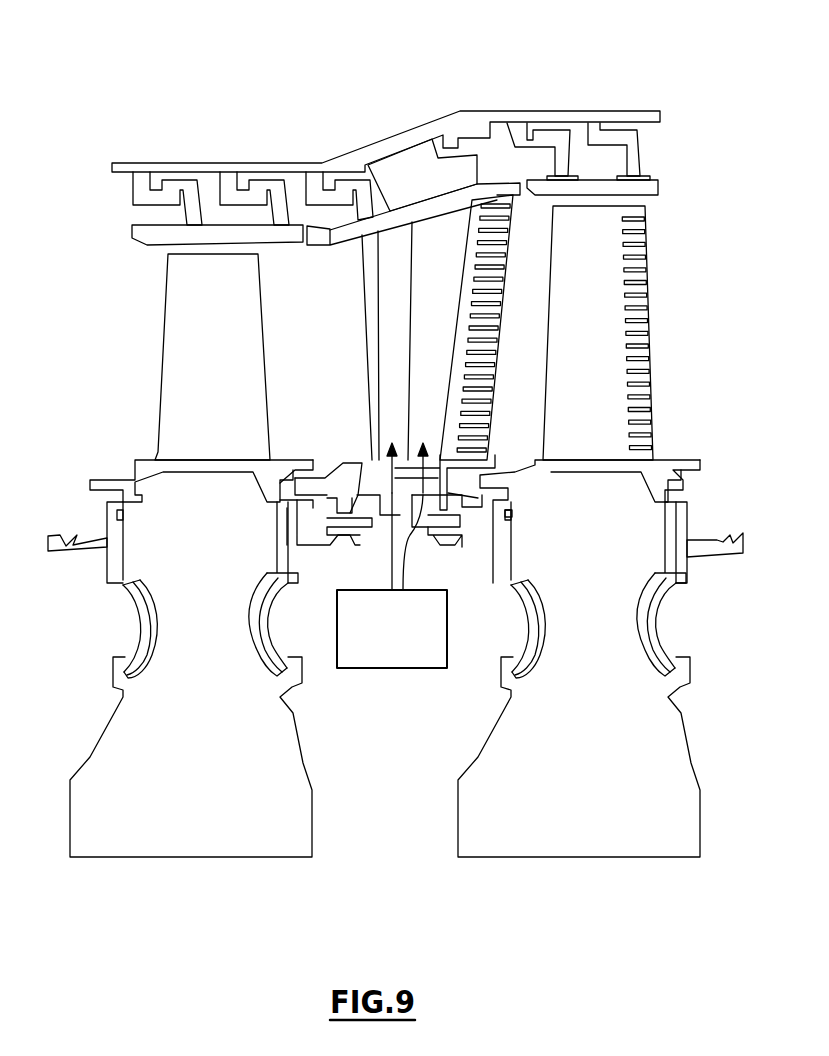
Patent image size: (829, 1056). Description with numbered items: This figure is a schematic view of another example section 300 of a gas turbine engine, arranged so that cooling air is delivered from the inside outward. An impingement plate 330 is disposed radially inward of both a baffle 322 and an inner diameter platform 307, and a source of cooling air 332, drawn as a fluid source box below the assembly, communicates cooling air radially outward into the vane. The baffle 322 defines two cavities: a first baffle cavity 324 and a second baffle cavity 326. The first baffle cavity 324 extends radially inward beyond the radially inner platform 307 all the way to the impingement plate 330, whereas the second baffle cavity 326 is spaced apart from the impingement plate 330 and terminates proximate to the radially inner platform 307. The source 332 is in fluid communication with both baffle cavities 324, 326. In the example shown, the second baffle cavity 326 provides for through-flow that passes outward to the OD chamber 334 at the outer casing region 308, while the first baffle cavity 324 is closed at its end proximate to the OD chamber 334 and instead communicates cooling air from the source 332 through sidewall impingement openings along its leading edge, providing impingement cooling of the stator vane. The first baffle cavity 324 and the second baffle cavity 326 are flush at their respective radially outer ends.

The section of a gas turbine engine 300 is at (585, 75).
The inner diameter platform 307 is at (487, 476).
The outer casing 308 is at (372, 150).
The baffle 322 is at (380, 349).
The first baffle cavity 324 is at (388, 298).
The second baffle cavity 326 is at (452, 277).
The impingement plate 330 is at (370, 483).
The source of cooling air 332 is at (375, 669).
The OD chamber 334 is at (427, 162).